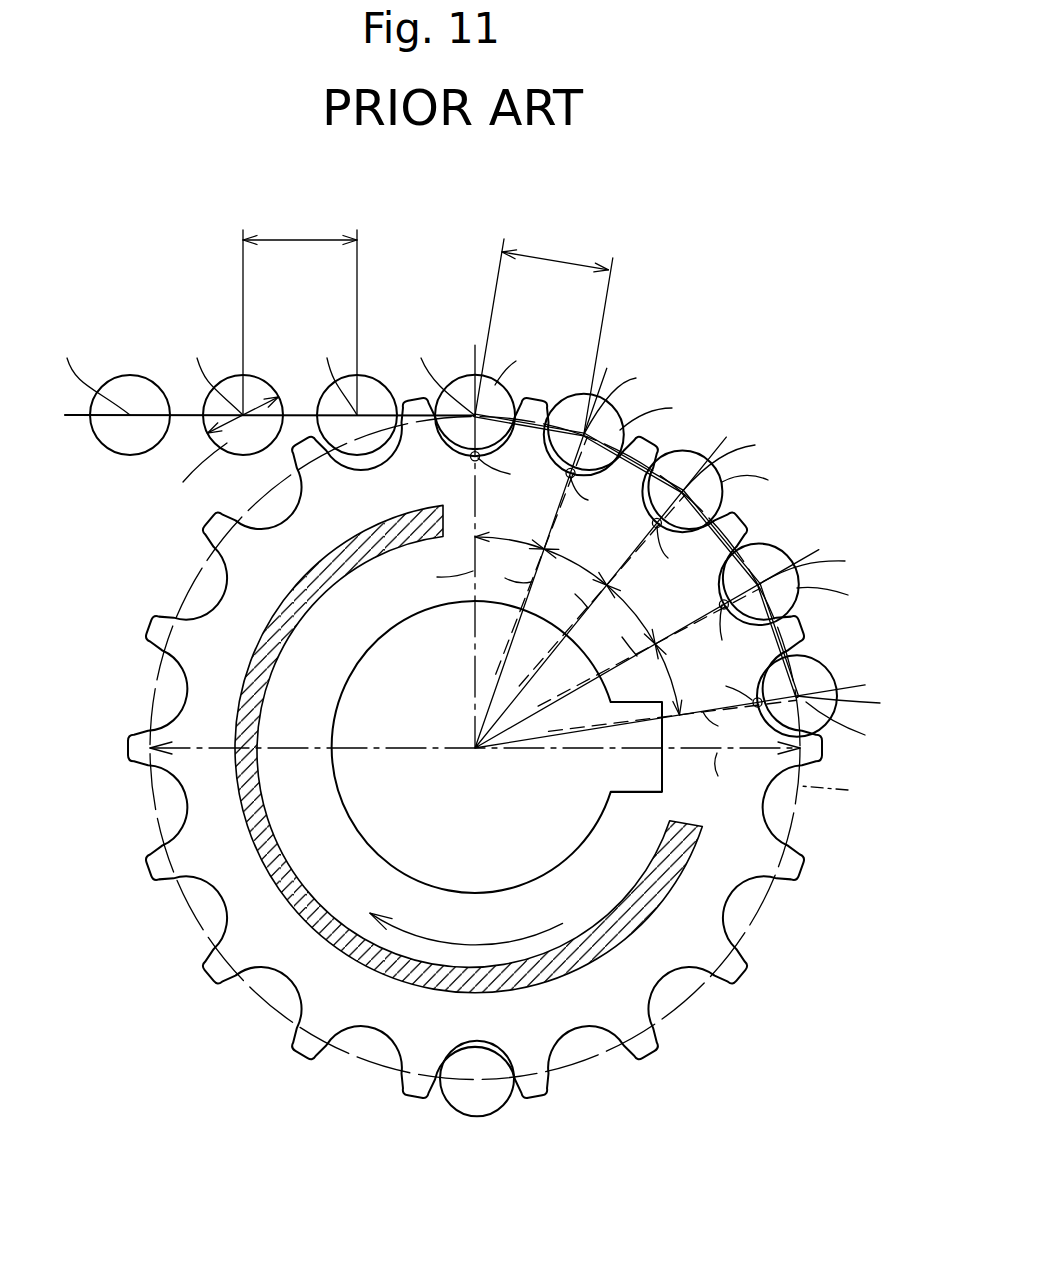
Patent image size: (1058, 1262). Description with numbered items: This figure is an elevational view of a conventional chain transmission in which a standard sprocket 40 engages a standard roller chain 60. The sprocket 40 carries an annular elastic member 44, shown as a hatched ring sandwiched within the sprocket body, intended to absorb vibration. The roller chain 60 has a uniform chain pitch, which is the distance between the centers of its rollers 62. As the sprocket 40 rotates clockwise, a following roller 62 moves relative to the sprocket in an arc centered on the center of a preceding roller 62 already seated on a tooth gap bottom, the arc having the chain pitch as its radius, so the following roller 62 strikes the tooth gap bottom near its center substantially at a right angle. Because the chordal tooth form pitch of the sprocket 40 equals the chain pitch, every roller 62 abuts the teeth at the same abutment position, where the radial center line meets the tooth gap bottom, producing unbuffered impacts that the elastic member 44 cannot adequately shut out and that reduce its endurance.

The sprocket 40 is at (482, 721).
The annular elastic member 44 is at (272, 853).
The standard roller chain 60 is at (478, 646).
The roller 62 is at (125, 377).